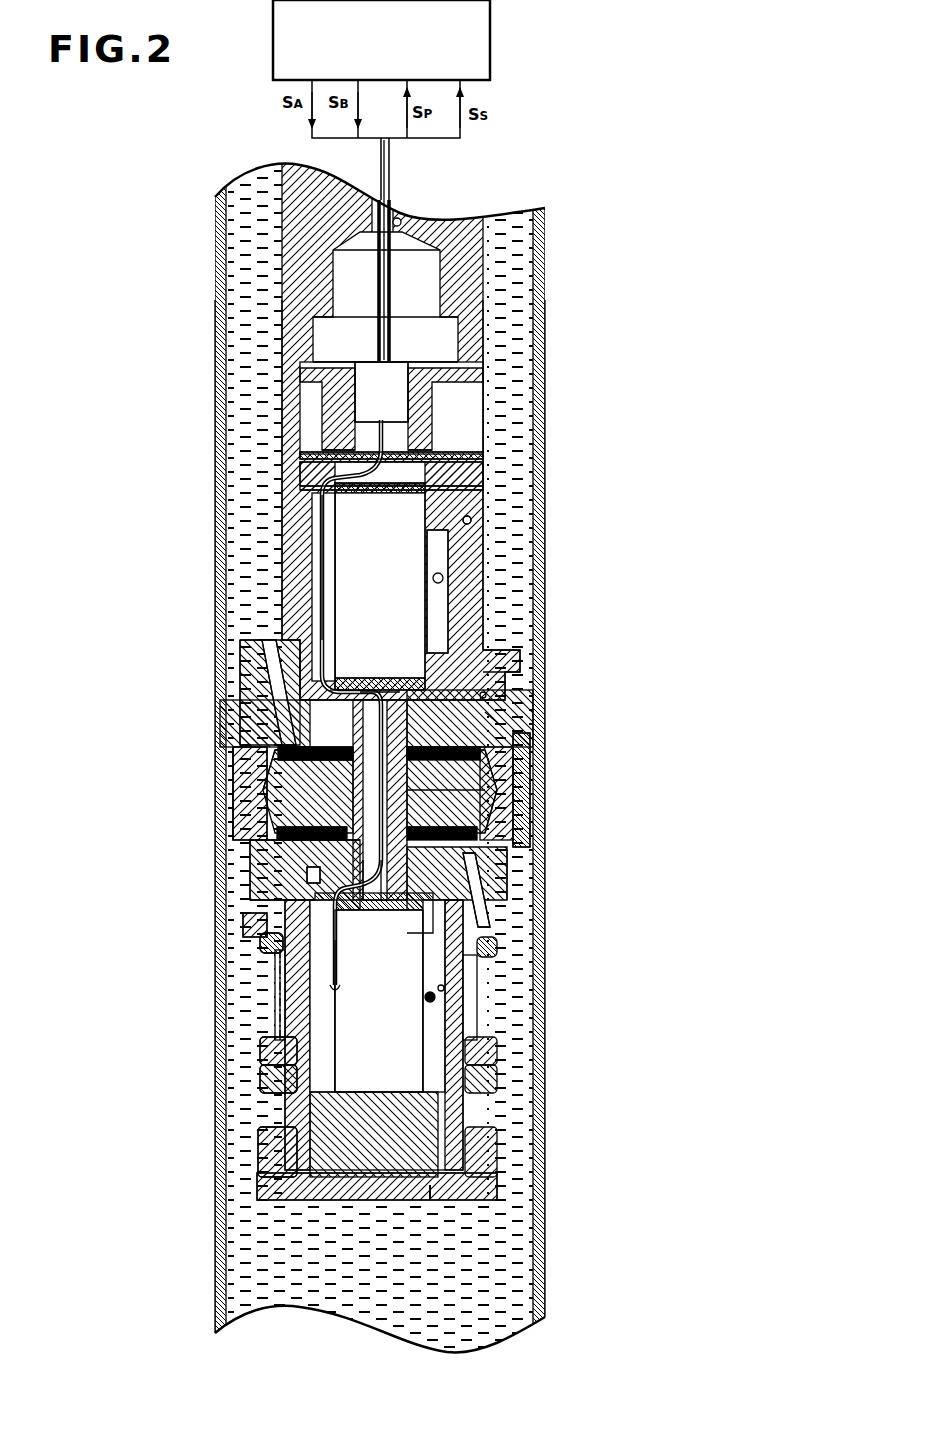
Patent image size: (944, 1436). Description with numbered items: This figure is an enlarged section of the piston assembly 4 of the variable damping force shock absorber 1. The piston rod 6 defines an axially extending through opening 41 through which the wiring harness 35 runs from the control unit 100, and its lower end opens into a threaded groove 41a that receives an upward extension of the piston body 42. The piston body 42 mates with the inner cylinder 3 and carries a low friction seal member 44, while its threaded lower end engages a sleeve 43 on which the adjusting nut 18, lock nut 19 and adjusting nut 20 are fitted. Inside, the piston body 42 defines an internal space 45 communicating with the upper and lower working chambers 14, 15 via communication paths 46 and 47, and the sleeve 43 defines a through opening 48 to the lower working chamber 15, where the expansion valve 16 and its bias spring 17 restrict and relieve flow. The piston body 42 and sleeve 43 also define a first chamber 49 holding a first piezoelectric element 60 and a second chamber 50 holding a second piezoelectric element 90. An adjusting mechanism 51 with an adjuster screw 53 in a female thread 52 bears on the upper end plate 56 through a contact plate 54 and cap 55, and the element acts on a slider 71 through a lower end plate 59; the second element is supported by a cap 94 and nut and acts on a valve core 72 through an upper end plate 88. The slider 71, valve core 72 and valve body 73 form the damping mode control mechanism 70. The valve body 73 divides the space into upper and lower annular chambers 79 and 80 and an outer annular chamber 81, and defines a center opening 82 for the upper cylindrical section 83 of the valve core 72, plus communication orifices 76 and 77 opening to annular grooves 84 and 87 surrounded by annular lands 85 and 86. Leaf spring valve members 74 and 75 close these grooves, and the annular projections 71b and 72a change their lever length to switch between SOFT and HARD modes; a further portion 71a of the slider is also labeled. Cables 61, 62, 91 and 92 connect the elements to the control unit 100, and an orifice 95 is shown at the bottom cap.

The shock absorber 1 is at (522, 118).
The inner cylinder 3 is at (546, 318).
The piston assembly 4 is at (648, 626).
The piston rod 6 is at (470, 240).
The upper working chamber 14 is at (268, 386).
The lower working chamber 15 is at (378, 1274).
The expansion valve 16 is at (262, 940).
The bias spring 17 is at (278, 960).
The adjusting nut 18 is at (262, 1052).
The lock nut 19 is at (262, 1078).
The adjusting nut 20 is at (260, 1150).
The wiring harness 35 is at (392, 228).
The through opening 41 is at (402, 222).
The threaded groove 41a is at (472, 519).
The piston body 42 is at (275, 622).
The sleeve 43 is at (300, 872).
The low friction seal member 44 is at (260, 680).
The internal space 45 is at (290, 778).
The communication path 46 is at (278, 640).
The communication path 47 is at (530, 818).
The through opening 48 is at (510, 889).
The first chamber 49 is at (450, 578).
The second chamber 50 is at (445, 1030).
The adjusting mechanism 51 is at (632, 368).
The female thread 52 is at (465, 420).
The adjuster screw 53 is at (470, 386).
The contact plate 54 is at (480, 455).
The cap 55 is at (480, 476).
The upper end plate 56 is at (480, 490).
The lower end plate 59 is at (365, 676).
The first piezoelectric element 60 is at (425, 602).
The cable 61 is at (328, 562).
The cable 62 is at (330, 596).
The damping mode control mechanism 70 is at (655, 762).
The slider 71 is at (520, 660).
The slider portion 71a is at (486, 695).
The annular projection 71b is at (342, 670).
The valve core 72 is at (505, 920).
The annular projection 72a is at (300, 870).
The valve body 73 is at (495, 792).
The upper valve member 74 is at (495, 738).
The lower valve member 75 is at (480, 846).
The communication orifice 76 is at (285, 815).
The communication orifice 77 is at (500, 764).
The upper annular chamber 79 is at (275, 745).
The lower annular chamber 80 is at (300, 898).
The annular chamber 81 is at (295, 812).
The center opening 82 is at (245, 920).
The upper cylindrical section 83 is at (500, 718).
The annular groove 84 is at (240, 730).
The annular land 85 is at (300, 757).
The annular land 86 is at (490, 860).
The annular groove 87 is at (400, 905).
The upper end plate 88 is at (366, 918).
The second piezoelectric element 90 is at (418, 1052).
The cable 91 is at (340, 970).
The cable 92 is at (338, 993).
The cap 94 is at (465, 1156).
The orifice 95 is at (430, 1200).
The control unit 100 is at (492, 42).